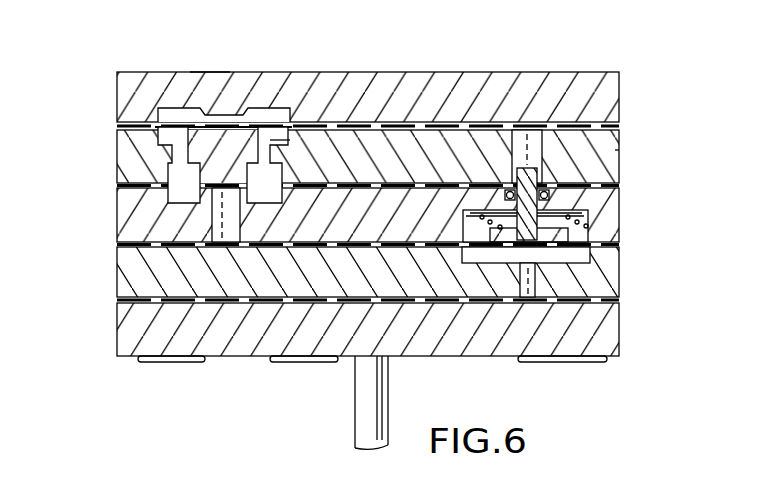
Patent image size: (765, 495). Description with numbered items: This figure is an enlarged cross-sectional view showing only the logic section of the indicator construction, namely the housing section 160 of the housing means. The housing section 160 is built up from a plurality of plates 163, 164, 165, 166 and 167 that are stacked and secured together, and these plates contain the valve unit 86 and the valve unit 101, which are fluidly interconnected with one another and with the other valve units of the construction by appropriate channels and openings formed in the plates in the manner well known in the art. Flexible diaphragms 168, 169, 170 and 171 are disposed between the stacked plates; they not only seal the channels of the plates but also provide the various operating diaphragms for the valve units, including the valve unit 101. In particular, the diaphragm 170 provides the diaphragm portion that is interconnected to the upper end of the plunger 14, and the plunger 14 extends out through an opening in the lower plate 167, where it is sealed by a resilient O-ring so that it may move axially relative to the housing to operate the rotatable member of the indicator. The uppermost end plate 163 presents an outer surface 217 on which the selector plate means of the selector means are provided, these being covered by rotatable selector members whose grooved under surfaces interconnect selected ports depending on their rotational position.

The plunger 14 is at (360, 408).
The valve unit 86 is at (282, 138).
The valve unit 101 is at (563, 204).
The housing section 160 is at (657, 170).
The end plate 163 is at (607, 100).
The plate 164 is at (605, 152).
The plate 165 is at (615, 228).
The plate 166 is at (612, 270).
The lower plate 167 is at (612, 325).
The flexible diaphragm 168 is at (135, 118).
The flexible diaphragm 169 is at (138, 178).
The flexible diaphragm 170 is at (140, 236).
The flexible diaphragm 171 is at (150, 296).
The outer surface 217 is at (192, 70).